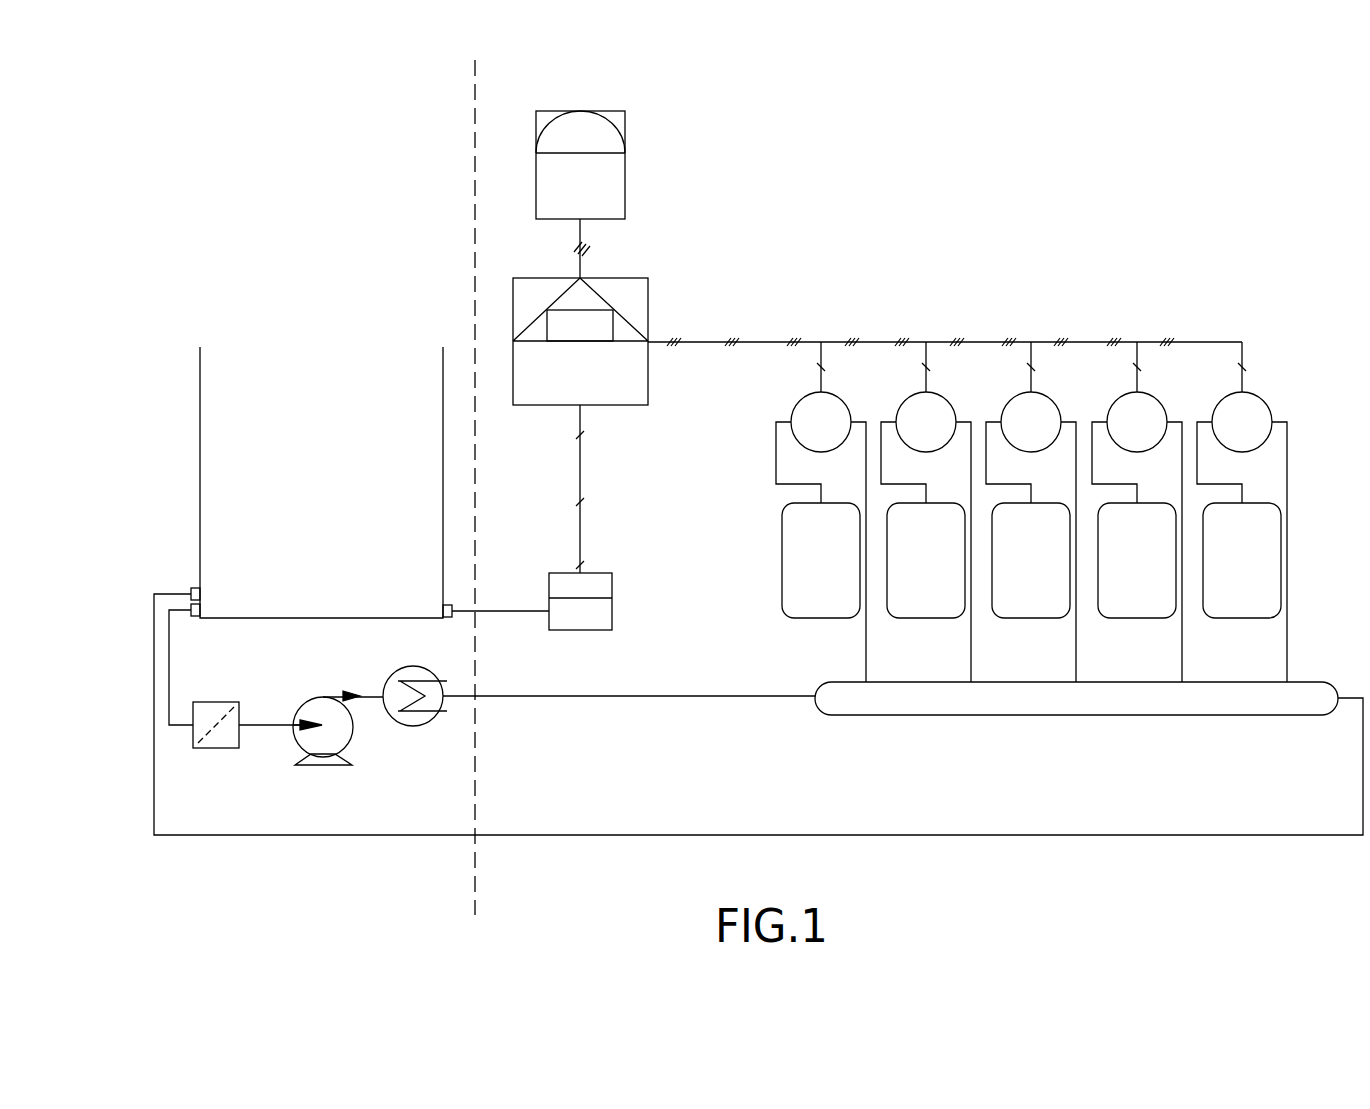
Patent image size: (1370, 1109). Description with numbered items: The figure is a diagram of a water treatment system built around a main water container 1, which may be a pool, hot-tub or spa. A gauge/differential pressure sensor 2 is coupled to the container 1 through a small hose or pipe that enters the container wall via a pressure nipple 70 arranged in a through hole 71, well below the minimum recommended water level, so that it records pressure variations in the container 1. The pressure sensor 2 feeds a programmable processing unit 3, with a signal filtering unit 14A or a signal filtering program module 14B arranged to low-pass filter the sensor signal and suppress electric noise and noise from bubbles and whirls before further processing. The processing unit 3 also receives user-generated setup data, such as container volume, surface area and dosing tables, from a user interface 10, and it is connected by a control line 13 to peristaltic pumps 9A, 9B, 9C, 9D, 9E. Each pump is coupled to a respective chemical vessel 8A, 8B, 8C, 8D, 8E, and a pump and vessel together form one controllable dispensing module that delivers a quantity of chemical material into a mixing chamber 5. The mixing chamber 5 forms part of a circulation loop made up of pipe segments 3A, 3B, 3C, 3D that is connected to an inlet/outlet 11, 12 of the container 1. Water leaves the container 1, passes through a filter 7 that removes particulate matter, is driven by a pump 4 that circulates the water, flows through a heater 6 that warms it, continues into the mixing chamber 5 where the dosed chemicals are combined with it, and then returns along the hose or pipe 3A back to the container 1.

The main water container 1 is at (200, 455).
The pressure sensor 2 is at (612, 614).
The programmable processing unit 3 is at (648, 298).
The circulation loop segment 3A is at (688, 835).
The circulation loop segment 3B is at (588, 696).
The circulation loop segment 3C is at (265, 725).
The circulation loop segment 3D is at (362, 740).
The pump 4 is at (305, 700).
The mixing chamber 5 is at (1069, 715).
The heater 6 is at (403, 666).
The filter 7 is at (209, 702).
The chemical vessel 8A is at (809, 618).
The chemical vessel 8B is at (914, 618).
The chemical vessel 8C is at (1019, 618).
The chemical vessel 8D is at (1125, 618).
The chemical vessel 8E is at (1230, 618).
The peristaltic pump 9A is at (812, 512).
The peristaltic pump 9B is at (917, 512).
The peristaltic pump 9C is at (1022, 512).
The peristaltic pump 9D is at (1128, 512).
The peristaltic pump 9E is at (1233, 512).
The user interface 10 is at (625, 155).
The inlet/outlet 11 is at (205, 590).
The inlet/outlet 12 is at (207, 609).
The control bus line 13 is at (753, 342).
The signal filtering unit 14A is at (612, 585).
The signal filtering program module 14B is at (596, 310).
The pressure nipple 70 is at (458, 610).
The through hole 71 is at (443, 607).